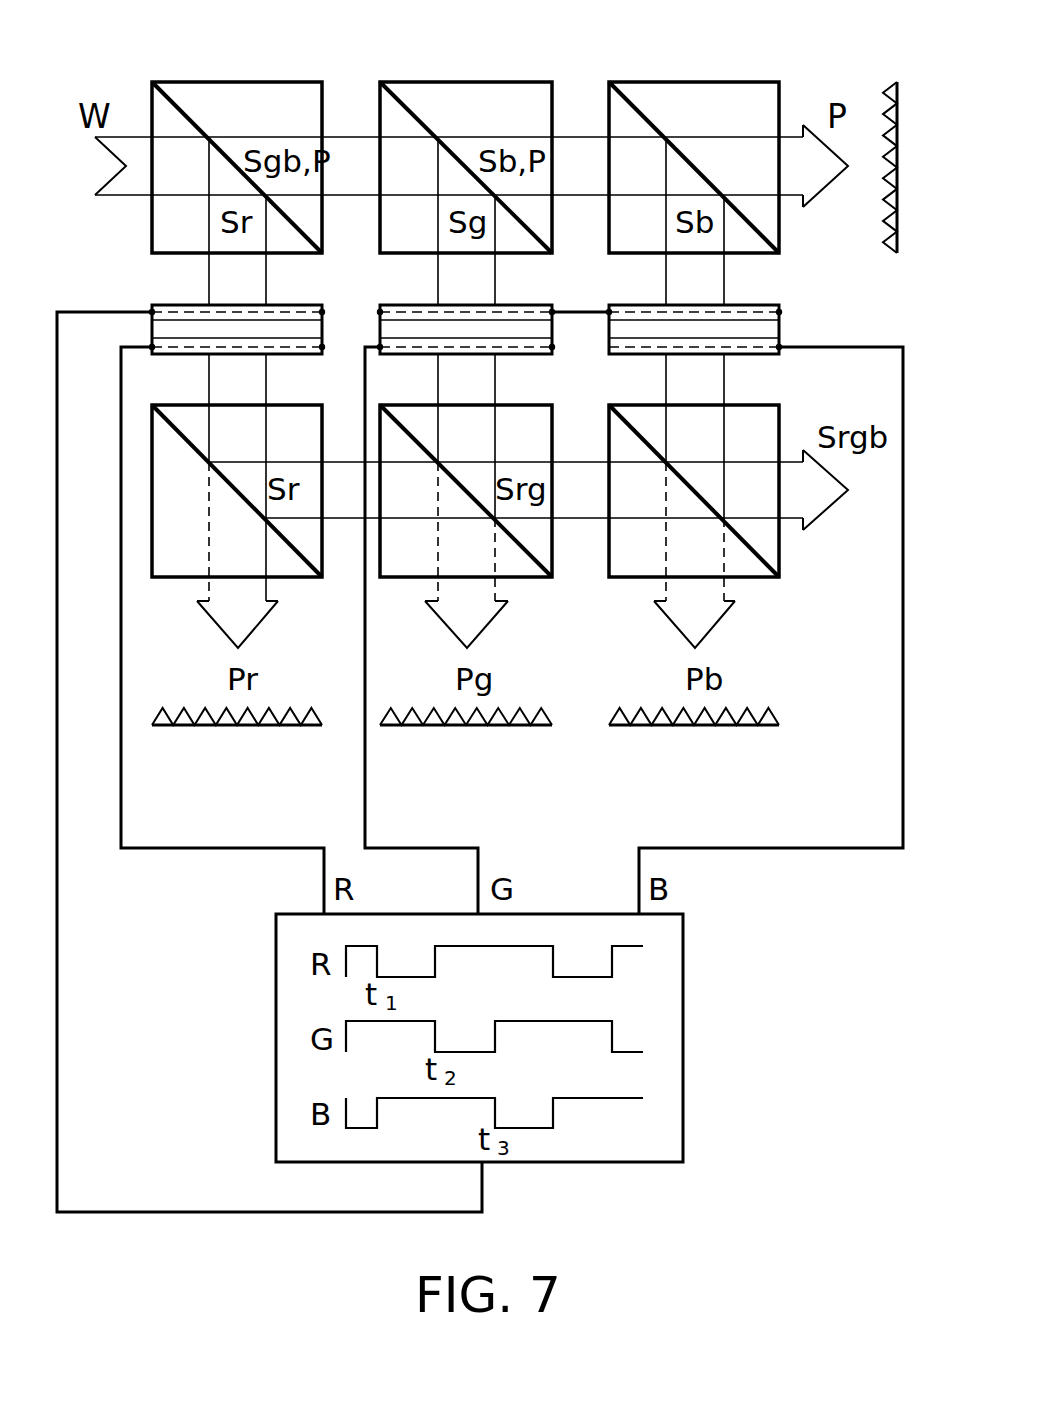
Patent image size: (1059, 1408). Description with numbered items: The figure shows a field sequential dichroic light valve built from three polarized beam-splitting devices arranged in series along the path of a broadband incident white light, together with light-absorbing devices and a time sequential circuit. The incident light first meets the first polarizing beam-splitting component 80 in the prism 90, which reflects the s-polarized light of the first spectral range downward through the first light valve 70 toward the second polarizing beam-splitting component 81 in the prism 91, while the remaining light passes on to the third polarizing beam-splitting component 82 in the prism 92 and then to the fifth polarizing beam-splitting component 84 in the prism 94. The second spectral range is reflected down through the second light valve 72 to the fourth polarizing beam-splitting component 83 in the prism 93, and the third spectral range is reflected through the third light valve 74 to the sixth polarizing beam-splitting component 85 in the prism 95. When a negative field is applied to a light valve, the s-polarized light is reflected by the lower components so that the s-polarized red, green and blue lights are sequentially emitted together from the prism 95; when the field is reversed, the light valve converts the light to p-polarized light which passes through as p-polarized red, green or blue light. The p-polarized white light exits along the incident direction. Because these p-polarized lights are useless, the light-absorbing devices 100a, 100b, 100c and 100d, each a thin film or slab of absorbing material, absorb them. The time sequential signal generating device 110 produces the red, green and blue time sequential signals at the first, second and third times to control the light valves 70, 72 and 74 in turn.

The first light valve 70 is at (160, 304).
The second light valve 72 is at (389, 304).
The third light valve 74 is at (781, 326).
The first polarizing beam-splitting component 80 is at (188, 116).
The third polarizing beam-splitting component 82 is at (416, 116).
The fifth polarizing beam-splitting component 84 is at (646, 116).
The prism 90 is at (269, 116).
The prism 92 is at (497, 116).
The prism 94 is at (727, 116).
The second polarizing beam-splitting component 81 is at (289, 544).
The fourth polarizing beam-splitting component 83 is at (518, 544).
The sixth polarizing beam-splitting component 85 is at (746, 544).
The prism 91 is at (322, 540).
The prism 93 is at (552, 540).
The prism 95 is at (779, 540).
The light-absorbing device 100a is at (240, 727).
The light-absorbing device 100b is at (469, 727).
The light-absorbing device 100c is at (697, 727).
The light-absorbing device 100d is at (890, 81).
The time sequential signal generating device 110 is at (684, 990).